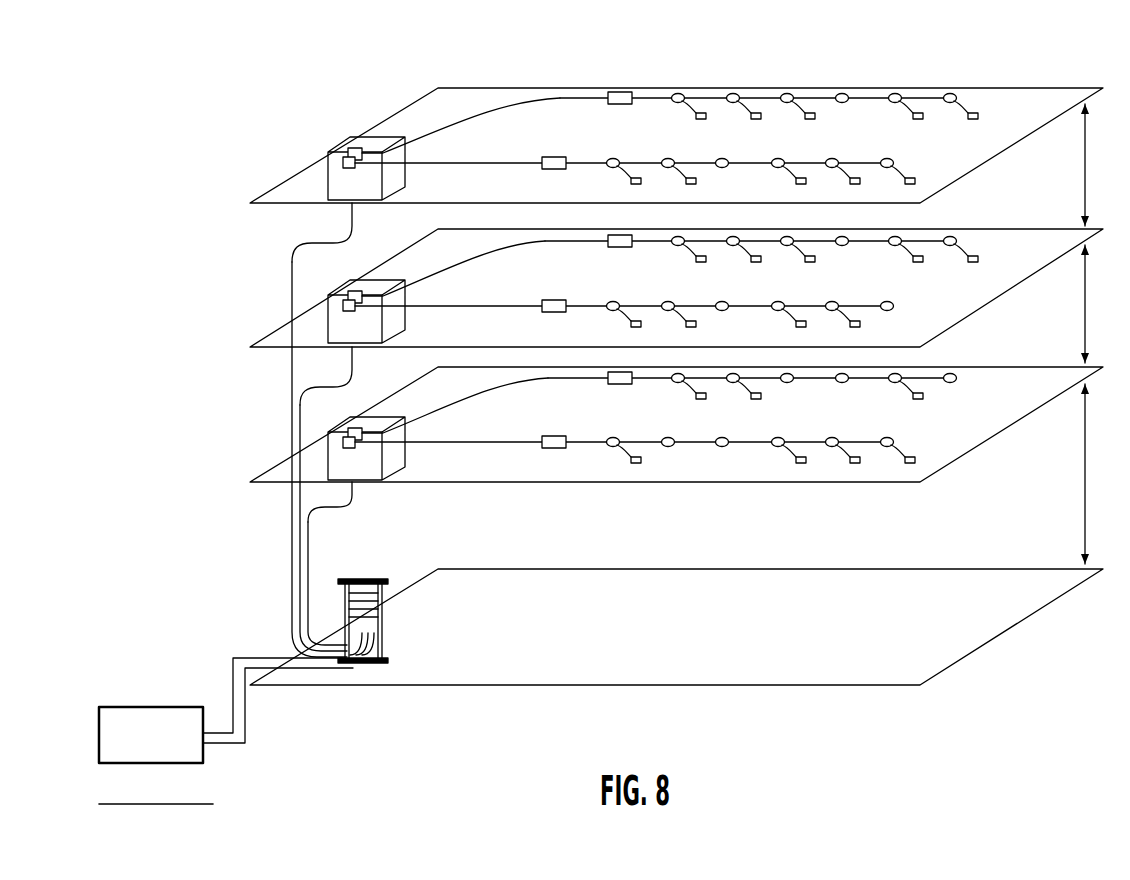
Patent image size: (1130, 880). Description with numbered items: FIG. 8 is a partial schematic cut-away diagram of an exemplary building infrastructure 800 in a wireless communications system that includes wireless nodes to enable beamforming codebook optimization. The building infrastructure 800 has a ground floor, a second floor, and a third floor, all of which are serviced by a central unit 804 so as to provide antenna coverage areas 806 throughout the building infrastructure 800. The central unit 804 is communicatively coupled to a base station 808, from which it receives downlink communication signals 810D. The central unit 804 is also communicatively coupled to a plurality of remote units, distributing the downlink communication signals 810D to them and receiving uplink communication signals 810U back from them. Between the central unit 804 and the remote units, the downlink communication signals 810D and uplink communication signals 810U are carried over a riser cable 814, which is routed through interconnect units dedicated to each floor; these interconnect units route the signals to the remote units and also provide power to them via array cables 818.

The building infrastructure 800 is at (735, 42).
The central unit 804 is at (403, 626).
The antenna coverage areas 806 is at (1084, 334).
The base station 808 is at (170, 748).
The downlink communication signals 810D is at (506, 97).
The uplink communication signals 810U is at (230, 646).
The riser cable 814 is at (291, 572).
The array cables 818 is at (556, 97).